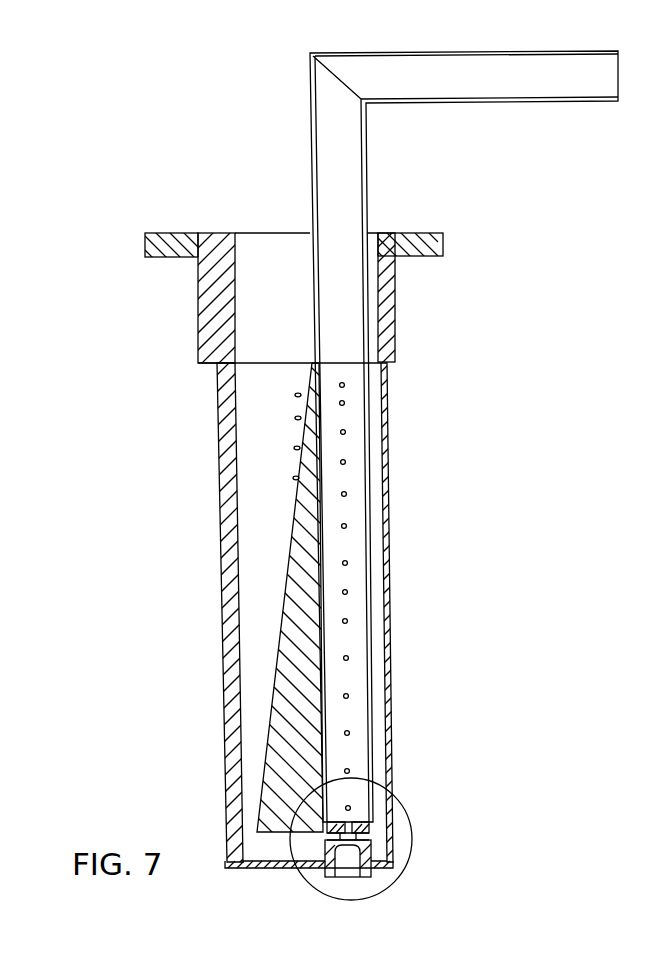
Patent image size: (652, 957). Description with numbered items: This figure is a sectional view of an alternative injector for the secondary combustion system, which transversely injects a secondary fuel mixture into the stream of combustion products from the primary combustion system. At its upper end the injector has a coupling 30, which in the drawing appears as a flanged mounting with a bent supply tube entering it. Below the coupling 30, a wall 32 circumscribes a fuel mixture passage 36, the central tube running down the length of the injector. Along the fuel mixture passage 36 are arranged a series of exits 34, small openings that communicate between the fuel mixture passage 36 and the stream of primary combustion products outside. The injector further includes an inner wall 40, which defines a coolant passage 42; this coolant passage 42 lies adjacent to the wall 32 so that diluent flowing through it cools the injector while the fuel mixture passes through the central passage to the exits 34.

The coupling 30 is at (125, 80).
The wall 32 is at (391, 632).
The exit 34 is at (348, 563).
The fuel mixture passage 36 is at (342, 171).
The inner wall 40 is at (308, 232).
The coolant passage 42 is at (270, 462).